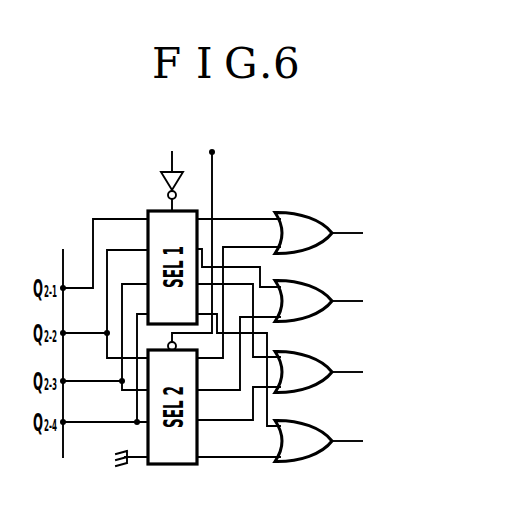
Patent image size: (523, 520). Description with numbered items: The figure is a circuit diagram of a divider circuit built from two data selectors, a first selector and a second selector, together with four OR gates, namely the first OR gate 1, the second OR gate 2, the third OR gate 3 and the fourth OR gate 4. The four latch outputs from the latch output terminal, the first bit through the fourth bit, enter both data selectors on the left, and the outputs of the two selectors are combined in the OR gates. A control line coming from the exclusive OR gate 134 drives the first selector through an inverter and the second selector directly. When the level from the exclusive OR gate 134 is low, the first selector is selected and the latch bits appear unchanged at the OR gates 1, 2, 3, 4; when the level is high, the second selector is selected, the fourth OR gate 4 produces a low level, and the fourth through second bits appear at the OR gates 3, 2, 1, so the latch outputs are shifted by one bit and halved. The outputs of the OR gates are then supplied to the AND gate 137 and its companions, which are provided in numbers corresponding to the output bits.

The OR gate OR1 1 is at (319, 232).
The OR gate OR2 2 is at (319, 300).
The OR gate OR3 3 is at (319, 371).
The OR gate OR4 4 is at (319, 440).
The exclusive OR gate 134 is at (172, 152).
The AND gate 137 is at (385, 214).